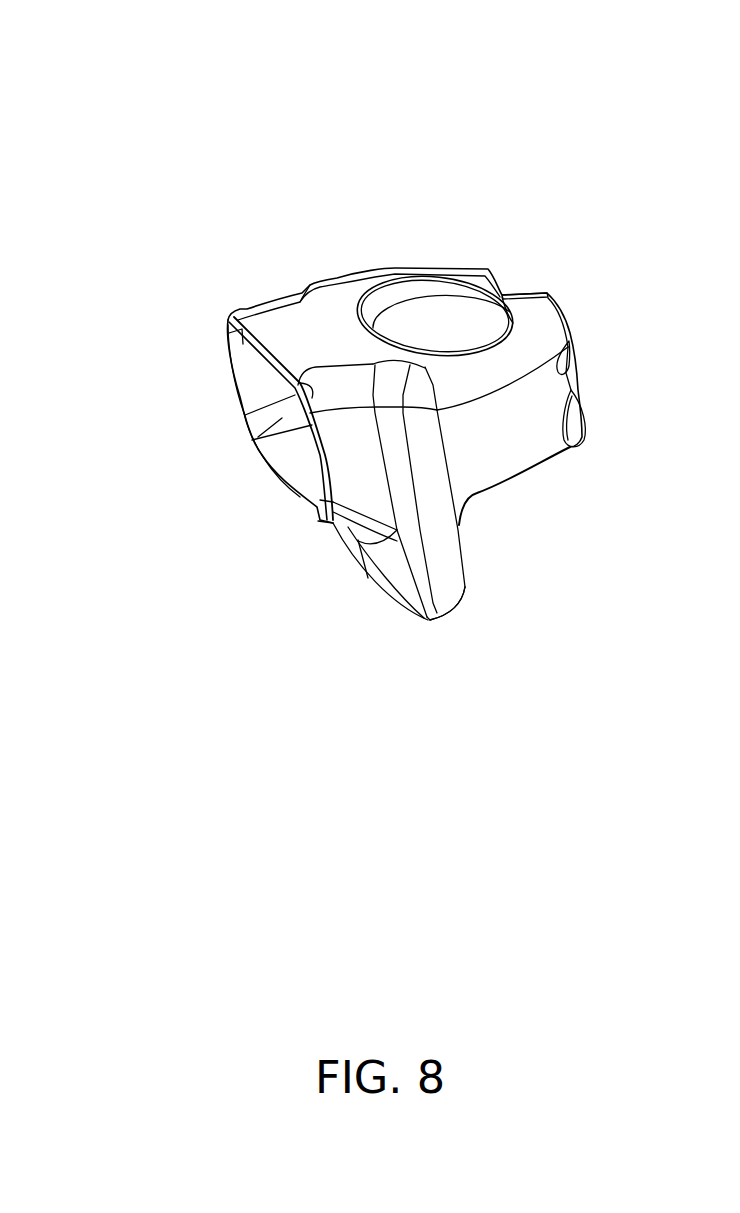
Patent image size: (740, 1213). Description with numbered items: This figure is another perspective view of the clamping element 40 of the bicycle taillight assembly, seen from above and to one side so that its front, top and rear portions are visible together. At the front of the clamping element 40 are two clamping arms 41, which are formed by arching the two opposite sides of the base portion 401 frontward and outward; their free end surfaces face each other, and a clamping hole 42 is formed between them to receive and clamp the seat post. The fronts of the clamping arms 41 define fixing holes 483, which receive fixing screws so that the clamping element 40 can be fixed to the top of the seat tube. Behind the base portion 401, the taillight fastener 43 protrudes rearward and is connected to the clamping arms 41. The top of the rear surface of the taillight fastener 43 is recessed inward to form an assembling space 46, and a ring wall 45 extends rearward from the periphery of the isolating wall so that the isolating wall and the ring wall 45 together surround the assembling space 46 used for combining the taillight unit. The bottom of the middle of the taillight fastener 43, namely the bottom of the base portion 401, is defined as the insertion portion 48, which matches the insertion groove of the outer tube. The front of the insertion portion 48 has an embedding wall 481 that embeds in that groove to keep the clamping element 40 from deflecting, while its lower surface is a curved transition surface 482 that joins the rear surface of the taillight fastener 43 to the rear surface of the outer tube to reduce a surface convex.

The clamping element 40 is at (78, 57).
The clamping arms 41 is at (530, 315).
The clamping hole 42 is at (437, 328).
The taillight fastener 43 is at (270, 494).
The ring wall 45 is at (235, 372).
The assembling space 46 is at (252, 440).
The insertion portion 48 is at (443, 612).
The base portion 401 is at (448, 577).
The embedding wall 481 is at (463, 550).
The curved transition surface 482 is at (350, 550).
The fixing holes 483 is at (571, 422).